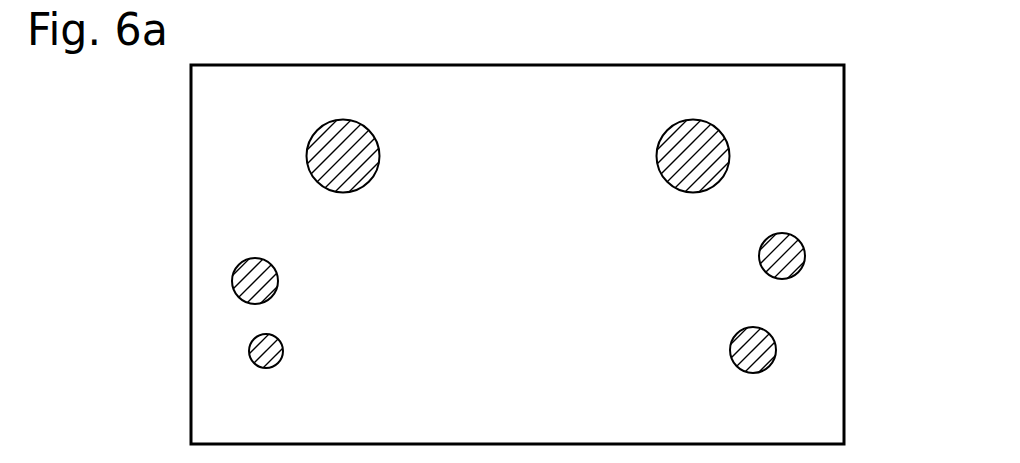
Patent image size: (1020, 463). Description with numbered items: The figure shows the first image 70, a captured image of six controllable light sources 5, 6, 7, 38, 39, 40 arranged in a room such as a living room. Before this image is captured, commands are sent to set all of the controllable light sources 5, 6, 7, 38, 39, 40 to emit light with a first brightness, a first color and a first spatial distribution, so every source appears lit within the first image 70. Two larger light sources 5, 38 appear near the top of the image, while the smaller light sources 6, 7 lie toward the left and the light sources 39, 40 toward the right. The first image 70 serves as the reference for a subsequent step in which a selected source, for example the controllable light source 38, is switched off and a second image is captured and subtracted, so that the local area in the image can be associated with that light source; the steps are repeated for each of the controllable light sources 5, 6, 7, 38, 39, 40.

The first image 70 is at (844, 119).
The controllable light source 5 is at (343, 148).
The controllable light source 38 is at (700, 147).
The controllable light source 6 is at (248, 280).
The controllable light source 7 is at (260, 350).
The controllable light source 39 is at (787, 258).
The controllable light source 40 is at (763, 352).